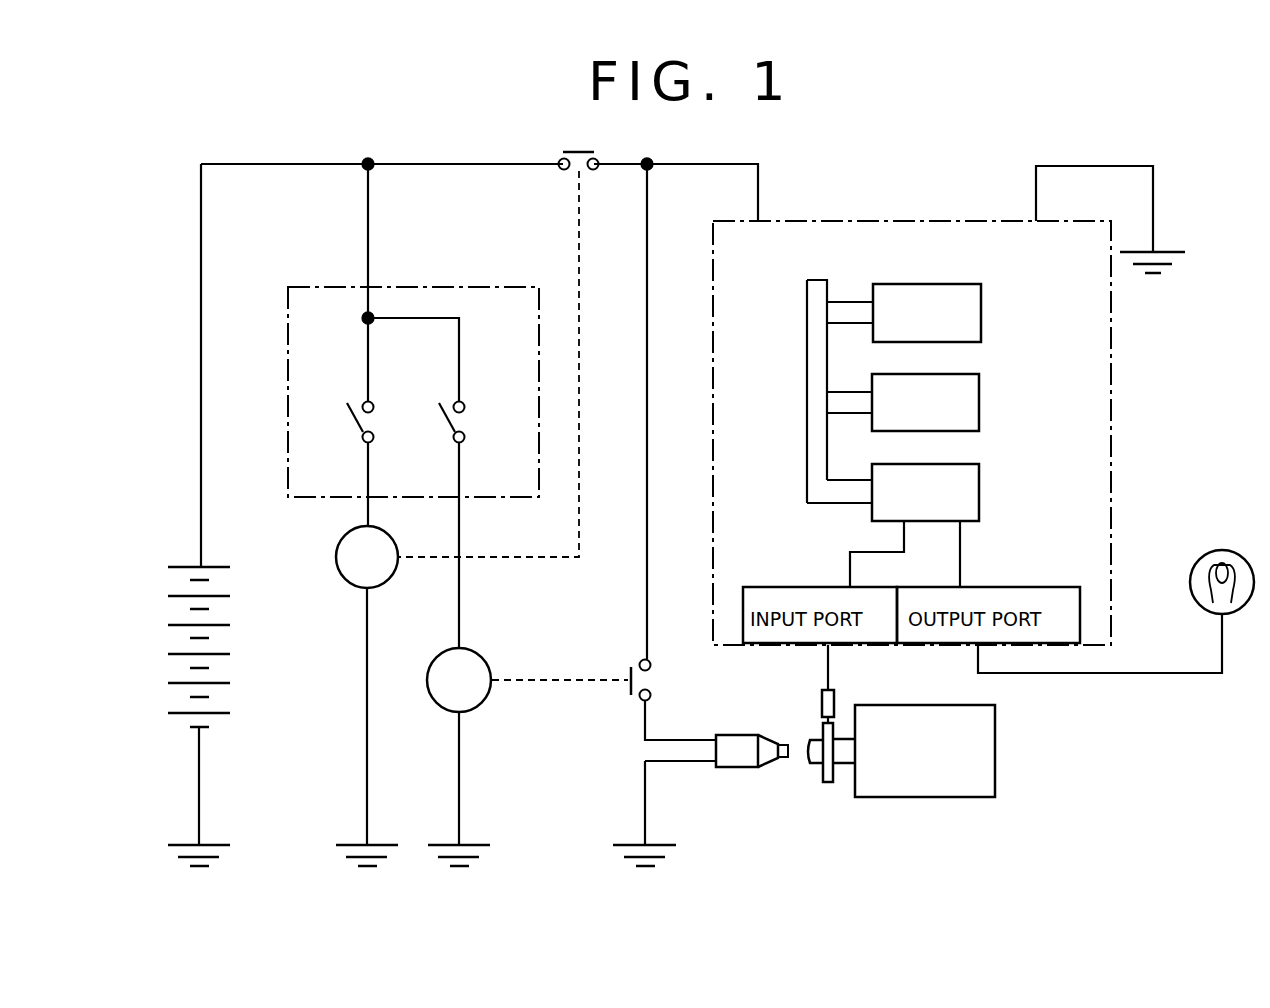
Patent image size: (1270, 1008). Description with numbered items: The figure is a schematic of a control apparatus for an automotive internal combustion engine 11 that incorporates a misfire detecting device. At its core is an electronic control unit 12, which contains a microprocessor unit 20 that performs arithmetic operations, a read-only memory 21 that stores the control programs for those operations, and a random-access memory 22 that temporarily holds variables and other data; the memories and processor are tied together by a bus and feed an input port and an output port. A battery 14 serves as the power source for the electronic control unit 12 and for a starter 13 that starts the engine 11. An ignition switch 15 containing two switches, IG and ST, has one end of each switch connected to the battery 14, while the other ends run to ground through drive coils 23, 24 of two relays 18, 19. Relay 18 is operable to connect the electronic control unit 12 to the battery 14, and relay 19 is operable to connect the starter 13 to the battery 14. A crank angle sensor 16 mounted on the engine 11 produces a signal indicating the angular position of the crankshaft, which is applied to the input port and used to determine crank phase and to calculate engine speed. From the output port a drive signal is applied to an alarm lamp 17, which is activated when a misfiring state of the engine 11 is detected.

The engine 11 is at (955, 797).
The electronic control unit 12 is at (932, 220).
The starter 13 is at (750, 768).
The battery 14 is at (240, 575).
The ignition switch 15 is at (340, 287).
The crank angle sensor 16 is at (803, 706).
The alarm lamp 17 is at (1225, 550).
The relay 18 is at (548, 150).
The relay 19 is at (634, 658).
The microprocessor unit 20 is at (955, 464).
The read-only memory 21 is at (958, 284).
The random-access memory 22 is at (955, 374).
The drive coil 23 is at (345, 582).
The drive coil 24 is at (487, 700).